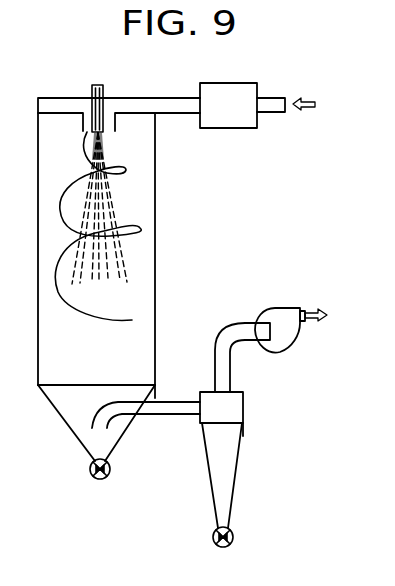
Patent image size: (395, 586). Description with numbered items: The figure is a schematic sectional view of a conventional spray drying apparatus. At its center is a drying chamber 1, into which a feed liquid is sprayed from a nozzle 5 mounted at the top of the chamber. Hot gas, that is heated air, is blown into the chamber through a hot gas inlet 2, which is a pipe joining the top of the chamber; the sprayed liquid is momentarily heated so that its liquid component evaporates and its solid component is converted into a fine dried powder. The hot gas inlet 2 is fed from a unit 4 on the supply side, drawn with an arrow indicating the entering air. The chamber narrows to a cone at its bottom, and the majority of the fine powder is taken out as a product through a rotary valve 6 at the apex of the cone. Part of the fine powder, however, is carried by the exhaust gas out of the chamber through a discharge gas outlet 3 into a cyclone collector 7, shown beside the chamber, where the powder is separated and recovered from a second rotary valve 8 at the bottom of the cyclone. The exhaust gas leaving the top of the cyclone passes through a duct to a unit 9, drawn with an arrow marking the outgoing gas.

The drying chamber 1 is at (157, 251).
The hot gas inlet 2 is at (190, 114).
The discharge gas outlet 3 is at (185, 416).
The heater 4 is at (240, 83).
The nozzle 5 is at (92, 93).
The rotary valve 6 is at (91, 476).
The cyclone separator 7 is at (243, 432).
The rotary valve 8 is at (213, 540).
The exhaust blower 9 is at (273, 352).